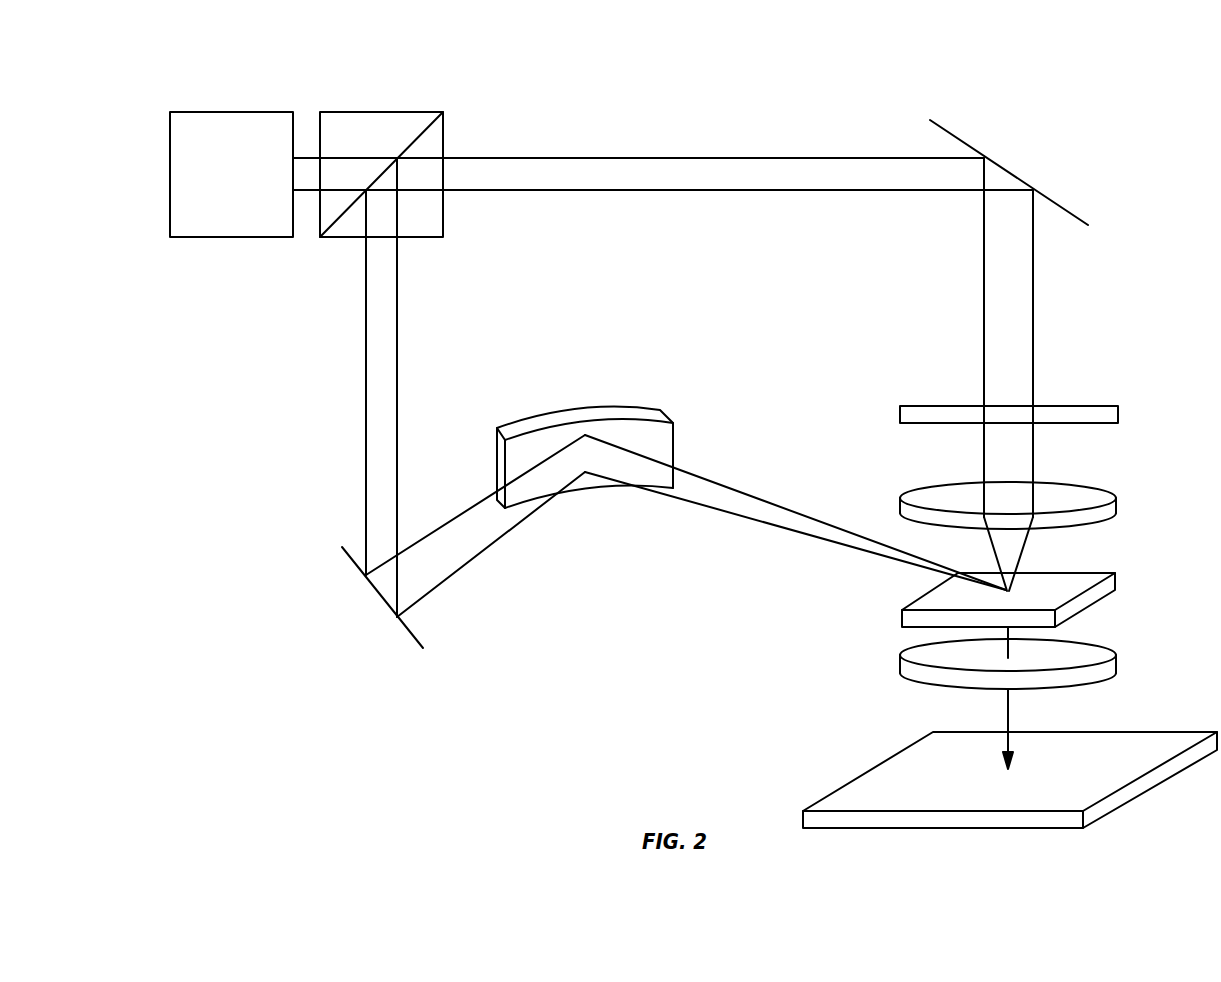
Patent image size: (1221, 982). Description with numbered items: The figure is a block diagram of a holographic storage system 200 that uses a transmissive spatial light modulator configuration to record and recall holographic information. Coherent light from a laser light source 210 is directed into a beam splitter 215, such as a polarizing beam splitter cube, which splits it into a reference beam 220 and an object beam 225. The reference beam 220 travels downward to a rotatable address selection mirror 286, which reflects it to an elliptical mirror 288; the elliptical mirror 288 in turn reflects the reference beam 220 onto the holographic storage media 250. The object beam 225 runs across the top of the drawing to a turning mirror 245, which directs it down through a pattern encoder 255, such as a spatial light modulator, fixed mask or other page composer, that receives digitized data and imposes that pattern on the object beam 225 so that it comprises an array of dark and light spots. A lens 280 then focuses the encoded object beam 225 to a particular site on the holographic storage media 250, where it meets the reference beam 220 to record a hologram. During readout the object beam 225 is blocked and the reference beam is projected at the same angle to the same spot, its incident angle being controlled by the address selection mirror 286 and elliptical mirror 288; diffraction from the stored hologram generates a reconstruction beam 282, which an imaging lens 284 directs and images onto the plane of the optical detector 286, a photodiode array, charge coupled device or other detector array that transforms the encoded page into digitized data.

The holographic storage system 200 is at (745, 74).
The laser light source 210 is at (236, 112).
The beam splitter 215 is at (386, 112).
The reference beam 220 is at (365, 392).
The object beam 225 is at (690, 158).
The turning mirror 245 is at (956, 137).
The pattern encoder 255 is at (1060, 406).
The lens 280 is at (1118, 508).
The holographic storage media 250 is at (1115, 585).
The imaging lens 284 is at (1118, 672).
The reconstruction beam 282 is at (1012, 721).
The address selection mirror 286 is at (378, 598).
The elliptical mirror 288 is at (570, 408).